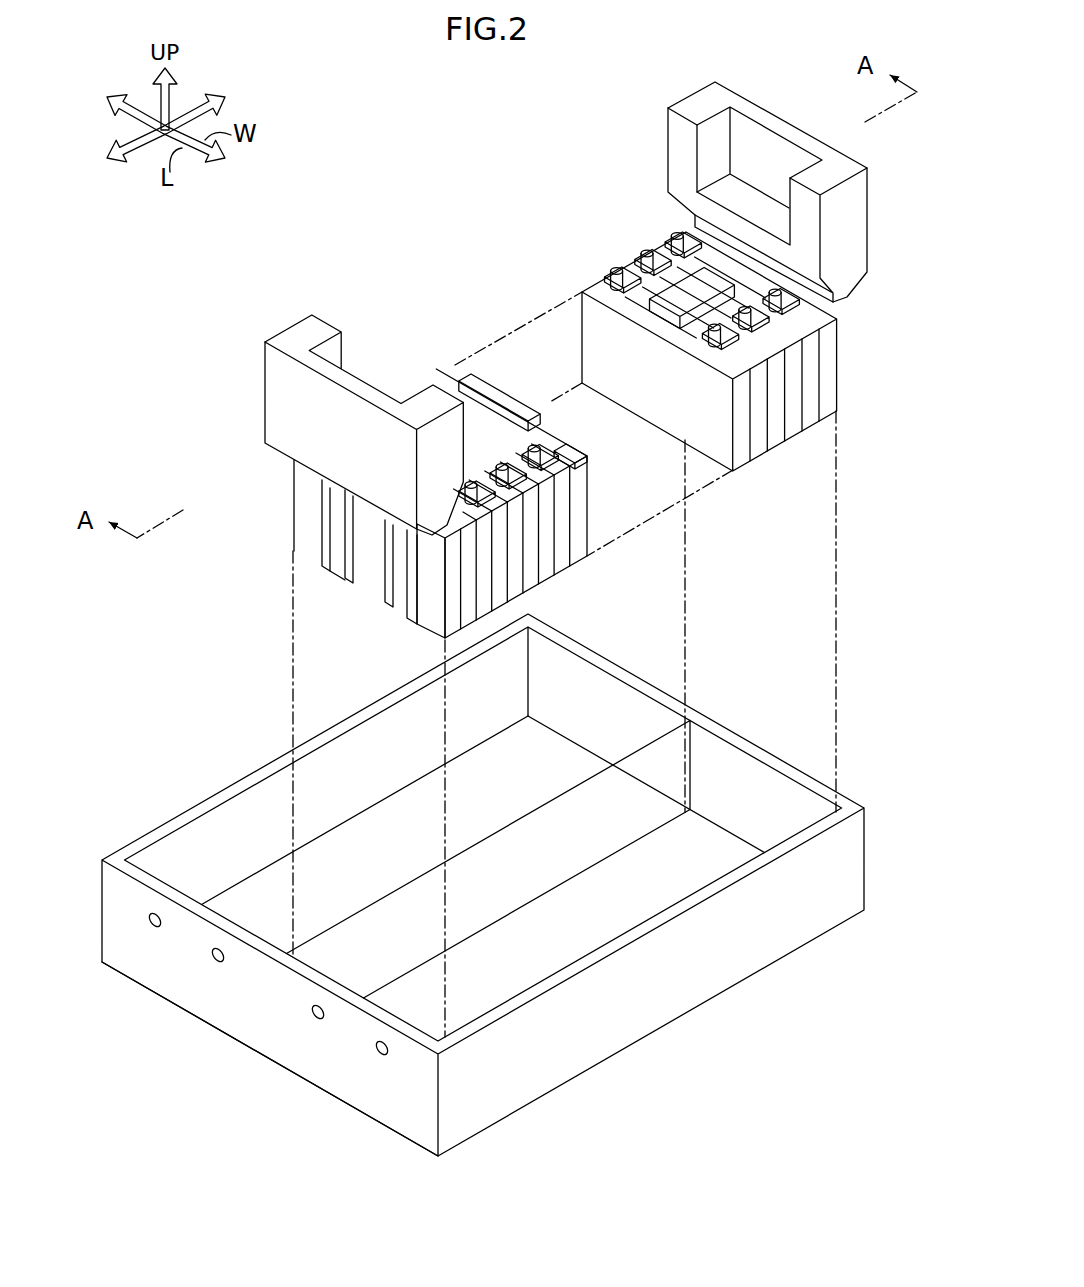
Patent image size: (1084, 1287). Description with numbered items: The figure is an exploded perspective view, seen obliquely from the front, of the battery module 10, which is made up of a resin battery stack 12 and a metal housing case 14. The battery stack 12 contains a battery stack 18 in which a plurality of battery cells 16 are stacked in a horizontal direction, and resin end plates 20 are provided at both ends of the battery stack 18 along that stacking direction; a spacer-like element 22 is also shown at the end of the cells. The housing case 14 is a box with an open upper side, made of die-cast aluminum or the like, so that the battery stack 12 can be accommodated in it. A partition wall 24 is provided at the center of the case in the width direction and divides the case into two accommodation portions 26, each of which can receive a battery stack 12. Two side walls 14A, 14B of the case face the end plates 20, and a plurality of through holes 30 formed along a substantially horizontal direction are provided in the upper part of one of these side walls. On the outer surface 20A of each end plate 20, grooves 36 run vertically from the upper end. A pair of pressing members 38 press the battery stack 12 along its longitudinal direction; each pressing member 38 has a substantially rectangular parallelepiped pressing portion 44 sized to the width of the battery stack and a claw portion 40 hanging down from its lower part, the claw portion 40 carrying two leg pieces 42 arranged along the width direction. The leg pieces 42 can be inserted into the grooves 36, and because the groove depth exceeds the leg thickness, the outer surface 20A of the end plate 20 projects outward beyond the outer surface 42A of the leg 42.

The battery module 10 is at (165, 288).
The battery stack 12 is at (495, 281).
The housing case 14 is at (679, 1026).
The side wall 14A is at (252, 1038).
The side wall 14B is at (718, 752).
The battery cell 16 is at (543, 570).
The battery stack 18 is at (748, 470).
The end plate 20 is at (838, 400).
The outer surface of end plate 20A is at (368, 580).
The spacer 22 is at (585, 537).
The partition wall 24 is at (598, 785).
The accommodation portion 26 is at (402, 853).
The through hole 30 is at (214, 958).
The groove 36 is at (346, 575).
The pressing member 38 is at (333, 320).
The claw portion 40 is at (319, 487).
The leg piece 42 is at (310, 557).
The outer surface of leg 42A is at (392, 547).
The pressing portion 44 is at (262, 390).